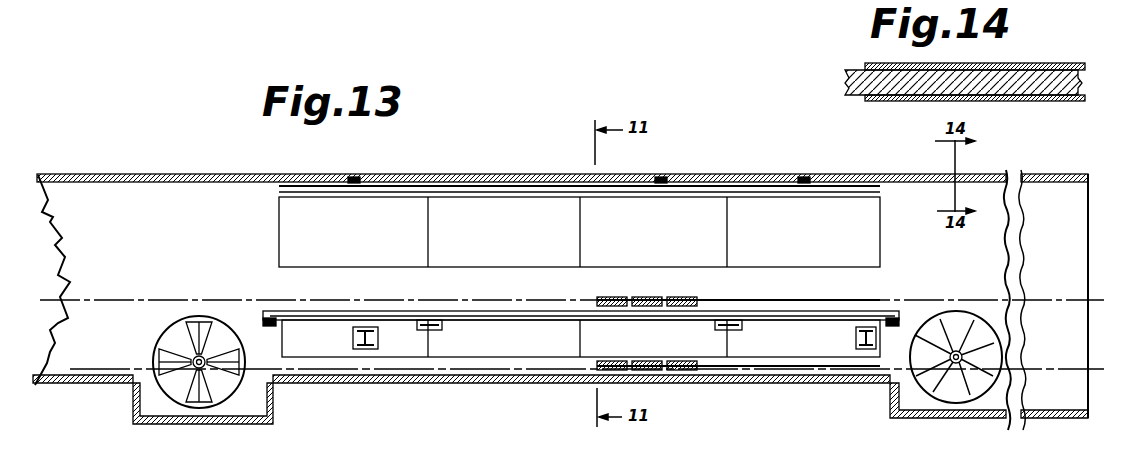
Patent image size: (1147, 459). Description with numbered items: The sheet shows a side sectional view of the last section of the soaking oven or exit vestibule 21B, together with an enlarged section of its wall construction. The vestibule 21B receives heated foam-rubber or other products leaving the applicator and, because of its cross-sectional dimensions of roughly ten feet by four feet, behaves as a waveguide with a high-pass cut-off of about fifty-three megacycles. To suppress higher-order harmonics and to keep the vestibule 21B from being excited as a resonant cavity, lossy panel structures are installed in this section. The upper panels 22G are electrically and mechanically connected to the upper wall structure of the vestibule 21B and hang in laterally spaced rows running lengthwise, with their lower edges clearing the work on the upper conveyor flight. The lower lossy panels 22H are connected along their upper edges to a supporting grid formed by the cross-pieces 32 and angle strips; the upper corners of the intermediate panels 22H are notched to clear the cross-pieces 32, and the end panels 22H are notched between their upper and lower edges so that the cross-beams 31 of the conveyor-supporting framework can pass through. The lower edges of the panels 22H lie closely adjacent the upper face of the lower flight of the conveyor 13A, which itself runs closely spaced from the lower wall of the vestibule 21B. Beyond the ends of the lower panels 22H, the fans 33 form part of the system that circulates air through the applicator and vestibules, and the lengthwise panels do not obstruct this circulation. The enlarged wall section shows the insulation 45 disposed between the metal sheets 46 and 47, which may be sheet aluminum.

In FIG. 13, the exit vestibule 21B is at (212, 147).
In FIG. 13, the upper panels 22G is at (372, 212).
In FIG. 13, the lower lossy panels 22H is at (327, 345).
In FIG. 13, the conveyor 13A is at (722, 299).
In FIG. 13, the cross-beams 31 is at (378, 338).
In FIG. 13, the cross-pieces 32 is at (262, 322).
In FIG. 13, the fans 33 is at (199, 335).
In FIG. 14, the insulation 45 is at (1072, 83).
In FIG. 14, the metal sheet 46 is at (1055, 101).
In FIG. 14, the metal sheet 47 is at (1043, 62).